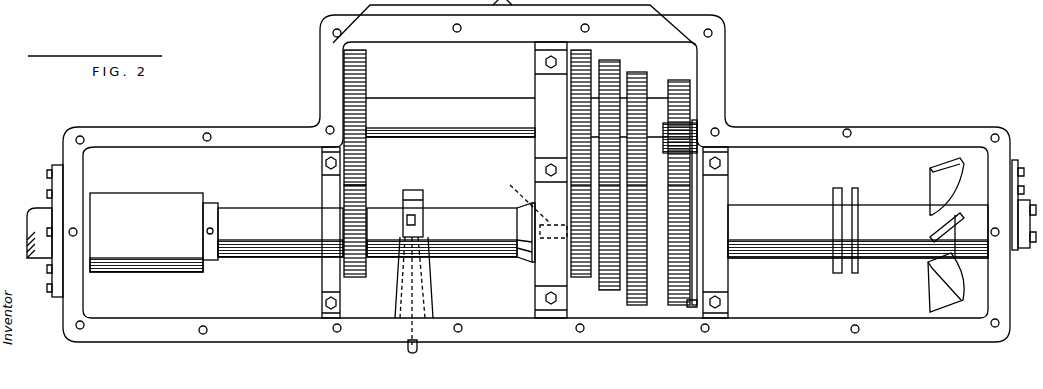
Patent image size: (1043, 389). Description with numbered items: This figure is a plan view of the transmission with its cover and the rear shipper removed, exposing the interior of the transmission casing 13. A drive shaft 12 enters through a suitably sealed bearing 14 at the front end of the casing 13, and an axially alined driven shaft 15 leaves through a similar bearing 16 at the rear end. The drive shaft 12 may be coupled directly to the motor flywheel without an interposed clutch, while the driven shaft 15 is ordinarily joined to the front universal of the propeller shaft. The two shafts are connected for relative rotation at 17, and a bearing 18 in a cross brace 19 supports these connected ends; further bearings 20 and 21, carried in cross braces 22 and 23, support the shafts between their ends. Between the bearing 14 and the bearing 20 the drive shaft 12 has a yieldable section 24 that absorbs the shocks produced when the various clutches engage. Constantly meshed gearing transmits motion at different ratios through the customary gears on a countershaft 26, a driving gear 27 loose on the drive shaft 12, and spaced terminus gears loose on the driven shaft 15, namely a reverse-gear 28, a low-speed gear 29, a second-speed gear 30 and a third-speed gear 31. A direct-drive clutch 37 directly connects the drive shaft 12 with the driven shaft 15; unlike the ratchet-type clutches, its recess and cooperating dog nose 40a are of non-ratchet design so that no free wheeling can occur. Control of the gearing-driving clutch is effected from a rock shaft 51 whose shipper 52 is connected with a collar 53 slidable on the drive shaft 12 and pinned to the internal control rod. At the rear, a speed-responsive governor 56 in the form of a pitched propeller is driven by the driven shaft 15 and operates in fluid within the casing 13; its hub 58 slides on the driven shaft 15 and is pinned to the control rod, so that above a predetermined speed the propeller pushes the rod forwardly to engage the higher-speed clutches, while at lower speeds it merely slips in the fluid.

The transmission casing 13 is at (116, 127).
The bearing 14 is at (50, 192).
The drive shaft 12 is at (40, 214).
The yieldable section 24 is at (176, 272).
The bearing 20 is at (322, 265).
The cross brace 22 is at (330, 150).
The driving gear 27 is at (355, 279).
The countershaft 26 is at (446, 108).
The cross brace 19 is at (532, 47).
The collar 53 is at (404, 204).
The shipper 52 is at (418, 204).
The rock shaft 51 is at (406, 348).
The connection of shaft ends 17 is at (518, 258).
The bearing 18 is at (540, 277).
The direct-drive clutch 37 is at (521, 197).
The dog nose and recess 40a is at (540, 232).
The third-speed gear 31 is at (587, 278).
The second-speed gear 30 is at (610, 292).
The low-speed gear 29 is at (638, 307).
The reverse-gear 28 is at (678, 307).
The cross brace 23 is at (730, 142).
The bearing 21 is at (728, 272).
The driven shaft 15 is at (766, 211).
The hub 58 is at (888, 206).
The bearing 16 is at (1012, 200).
The speed-responsive governor 56 is at (932, 288).